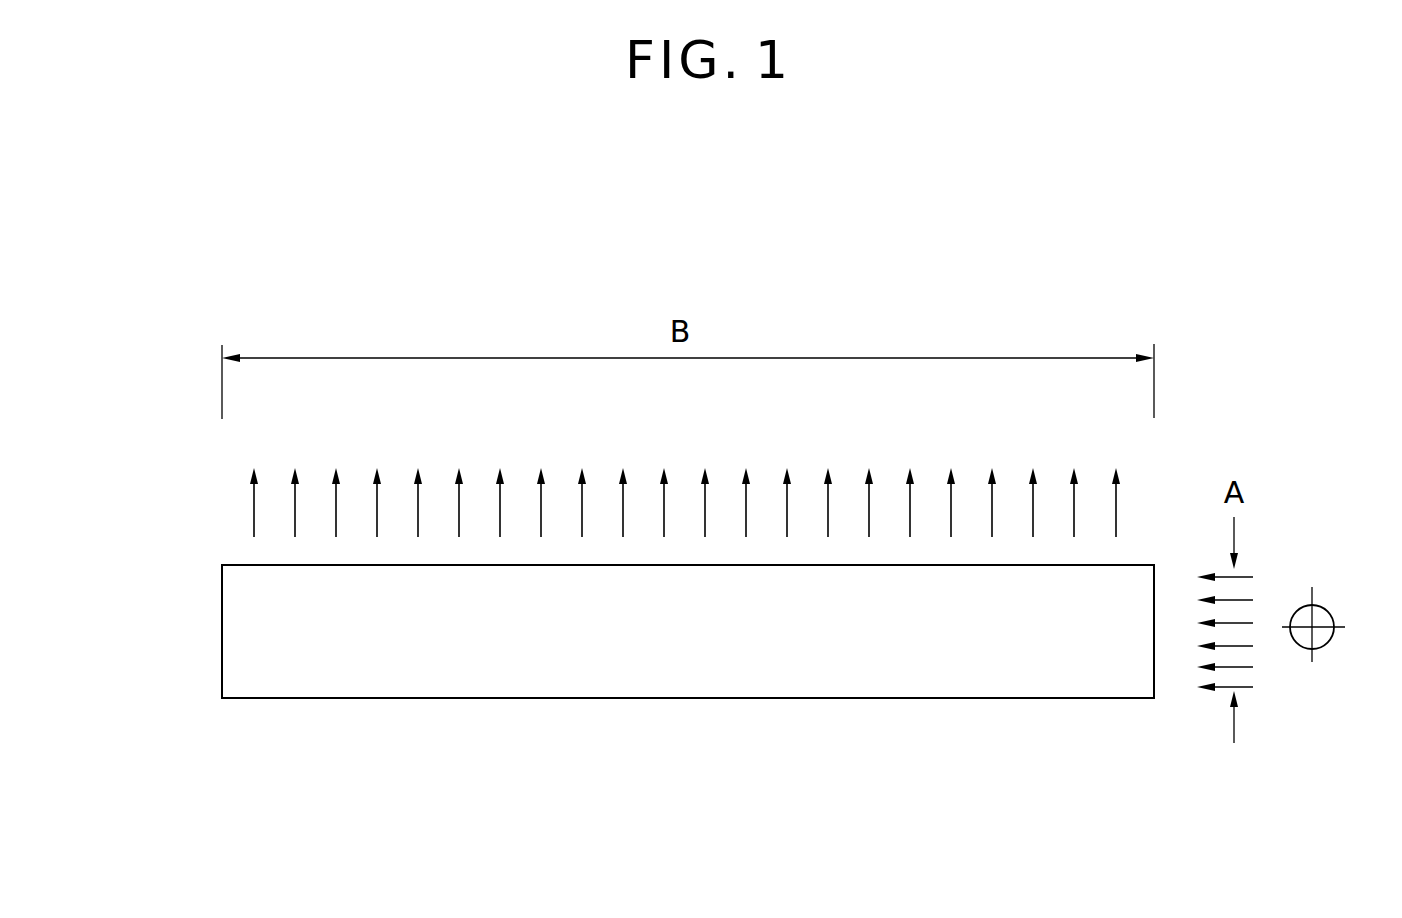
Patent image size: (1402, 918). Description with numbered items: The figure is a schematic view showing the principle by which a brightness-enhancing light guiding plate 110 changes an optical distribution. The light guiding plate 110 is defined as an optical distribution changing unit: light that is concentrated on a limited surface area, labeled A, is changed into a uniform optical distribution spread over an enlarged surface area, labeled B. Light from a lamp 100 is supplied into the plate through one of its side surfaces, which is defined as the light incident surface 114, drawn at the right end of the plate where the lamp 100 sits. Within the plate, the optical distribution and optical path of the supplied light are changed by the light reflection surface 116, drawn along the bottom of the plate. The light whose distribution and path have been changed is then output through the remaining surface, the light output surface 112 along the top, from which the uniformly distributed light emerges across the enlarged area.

The lamp 100 is at (1327, 643).
The light guiding plate 110 is at (977, 690).
The light output surface 112 is at (237, 565).
The light incident surface 114 is at (1155, 673).
The light reflection surface 116 is at (645, 698).